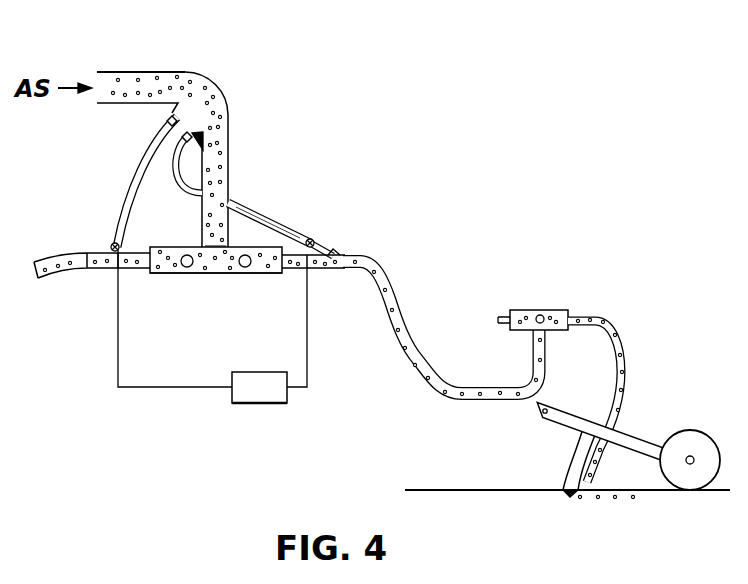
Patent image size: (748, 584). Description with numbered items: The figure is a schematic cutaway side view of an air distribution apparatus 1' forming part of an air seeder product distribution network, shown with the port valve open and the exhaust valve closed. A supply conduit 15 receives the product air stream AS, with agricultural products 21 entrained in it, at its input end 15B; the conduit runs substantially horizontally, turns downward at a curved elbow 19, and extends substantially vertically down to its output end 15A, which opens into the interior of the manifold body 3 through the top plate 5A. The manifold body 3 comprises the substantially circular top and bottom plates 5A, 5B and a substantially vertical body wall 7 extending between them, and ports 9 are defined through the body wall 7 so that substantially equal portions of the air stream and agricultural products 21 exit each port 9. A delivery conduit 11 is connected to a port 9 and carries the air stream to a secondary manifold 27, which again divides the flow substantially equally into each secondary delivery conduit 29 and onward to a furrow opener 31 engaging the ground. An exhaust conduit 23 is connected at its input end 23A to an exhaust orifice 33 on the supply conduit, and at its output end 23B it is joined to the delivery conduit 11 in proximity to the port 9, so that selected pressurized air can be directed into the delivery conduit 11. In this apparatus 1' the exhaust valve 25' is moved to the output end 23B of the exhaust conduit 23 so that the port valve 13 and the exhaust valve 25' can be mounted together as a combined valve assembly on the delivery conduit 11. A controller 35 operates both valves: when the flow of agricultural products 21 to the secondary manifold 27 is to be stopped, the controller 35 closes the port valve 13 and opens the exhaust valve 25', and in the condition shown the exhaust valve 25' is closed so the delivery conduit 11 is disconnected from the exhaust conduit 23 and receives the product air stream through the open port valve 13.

The air distribution apparatus 1' is at (391, 62).
The manifold body 3 is at (158, 277).
The top plate 5A is at (283, 218).
The bottom plate 5B is at (257, 275).
The body wall 7 is at (220, 270).
The port 9 is at (183, 268).
The delivery conduit 11 is at (397, 306).
The port valve 13 is at (320, 268).
The supply conduit 15 is at (229, 143).
The output end 15A is at (233, 244).
The input end 15B is at (100, 70).
The curved elbow 19 is at (217, 90).
The agricultural products 21 is at (157, 77).
The exhaust conduit 23 is at (262, 245).
The input end 23A is at (180, 143).
The output end 23B is at (306, 234).
The exhaust valve 25' is at (365, 245).
The secondary manifold 27 is at (537, 310).
The secondary delivery conduit 29 is at (607, 321).
The furrow opener 31 is at (567, 500).
The exhaust orifice 33 is at (182, 115).
The controller 35 is at (252, 403).